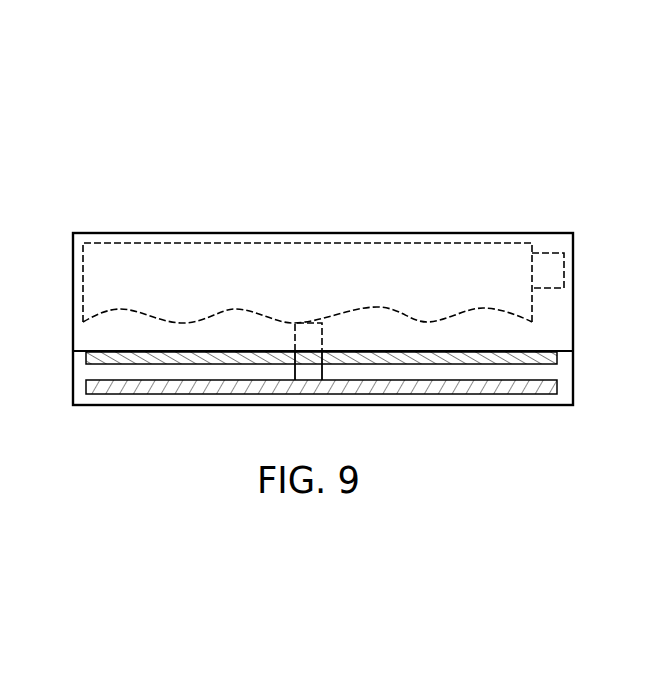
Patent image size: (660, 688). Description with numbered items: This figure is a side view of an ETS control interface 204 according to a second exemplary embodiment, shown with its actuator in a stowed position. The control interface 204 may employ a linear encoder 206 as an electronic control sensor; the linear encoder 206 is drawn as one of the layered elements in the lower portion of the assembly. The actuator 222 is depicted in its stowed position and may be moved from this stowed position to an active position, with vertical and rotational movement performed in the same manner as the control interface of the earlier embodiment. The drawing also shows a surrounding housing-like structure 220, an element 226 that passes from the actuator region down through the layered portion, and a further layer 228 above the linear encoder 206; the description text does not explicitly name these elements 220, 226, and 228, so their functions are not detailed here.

The control interface 204 is at (520, 176).
The housing 220 is at (103, 233).
The actuator 222 is at (218, 243).
The connector 226 is at (323, 333).
The upper substrate layer 228 is at (556, 356).
The linear encoder 206 is at (150, 388).